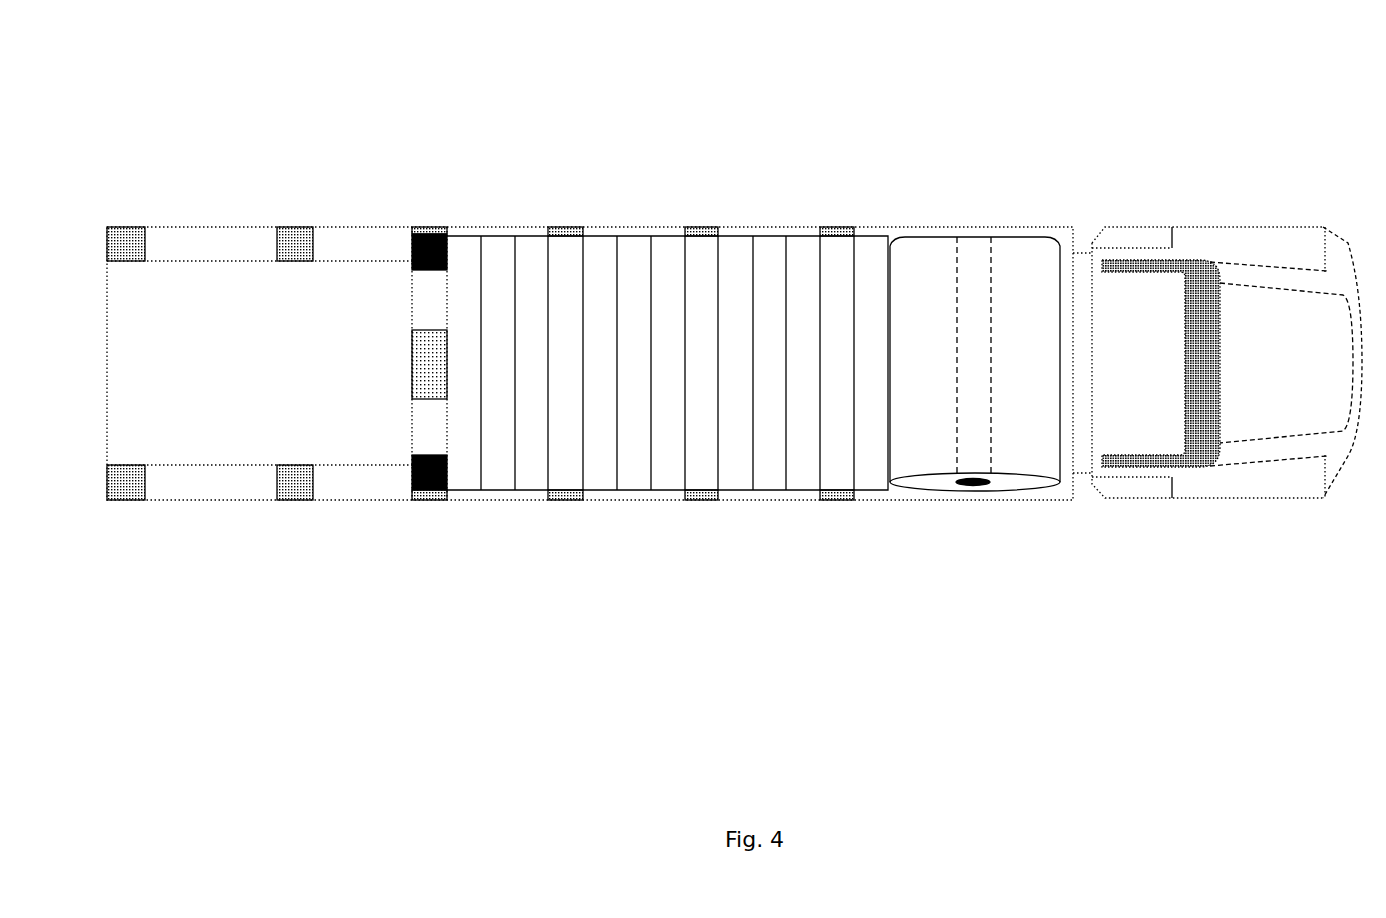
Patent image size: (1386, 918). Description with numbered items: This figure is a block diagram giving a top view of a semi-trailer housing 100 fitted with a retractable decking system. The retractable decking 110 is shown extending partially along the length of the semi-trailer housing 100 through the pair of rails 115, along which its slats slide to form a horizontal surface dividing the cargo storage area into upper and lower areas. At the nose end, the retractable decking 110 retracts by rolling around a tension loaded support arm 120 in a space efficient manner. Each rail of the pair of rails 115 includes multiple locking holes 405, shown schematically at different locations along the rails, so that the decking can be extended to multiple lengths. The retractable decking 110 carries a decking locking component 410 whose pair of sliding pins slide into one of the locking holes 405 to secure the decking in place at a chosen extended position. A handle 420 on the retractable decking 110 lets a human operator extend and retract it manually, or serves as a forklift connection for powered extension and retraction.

The semi-trailer housing 100 is at (276, 88).
The retractable decking 110 is at (773, 235).
The pair of rails 115 is at (214, 266).
The tension loaded support arm 120 is at (978, 236).
The locking holes 405 is at (297, 228).
The decking locking component 410 is at (409, 275).
The handle 420 is at (409, 385).